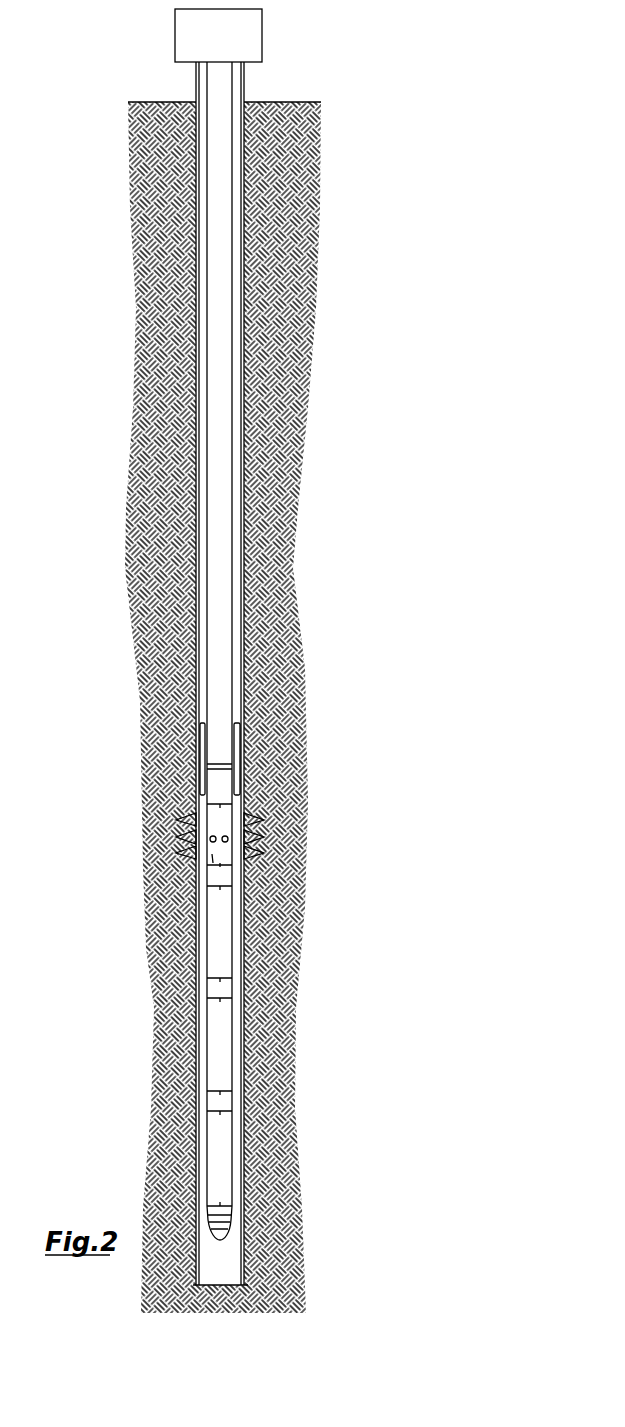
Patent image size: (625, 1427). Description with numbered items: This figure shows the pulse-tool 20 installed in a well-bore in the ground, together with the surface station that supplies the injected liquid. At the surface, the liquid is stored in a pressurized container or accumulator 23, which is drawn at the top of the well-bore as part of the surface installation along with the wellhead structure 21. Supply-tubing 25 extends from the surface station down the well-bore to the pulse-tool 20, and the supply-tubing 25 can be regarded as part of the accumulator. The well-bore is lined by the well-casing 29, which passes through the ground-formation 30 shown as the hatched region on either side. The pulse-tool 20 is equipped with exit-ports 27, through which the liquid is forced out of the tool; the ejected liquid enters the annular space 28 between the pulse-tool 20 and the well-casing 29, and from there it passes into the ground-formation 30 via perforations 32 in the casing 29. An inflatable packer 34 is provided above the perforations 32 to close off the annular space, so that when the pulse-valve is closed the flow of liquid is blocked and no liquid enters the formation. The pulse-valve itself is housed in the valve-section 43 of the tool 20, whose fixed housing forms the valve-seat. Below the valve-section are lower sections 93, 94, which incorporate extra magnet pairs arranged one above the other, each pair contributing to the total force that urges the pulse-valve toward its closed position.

The pulse-tool 20 is at (206, 1022).
The wellhead 21 is at (238, 20).
The accumulator 23 is at (240, 43).
The supply-tubing 25 is at (217, 315).
The exit-ports 27 is at (217, 836).
The annular space 28 is at (228, 377).
The well-casing 29 is at (237, 573).
The ground-formation 30 is at (285, 473).
The perforations 32 is at (243, 833).
The inflatable packer 34 is at (228, 745).
The valve-section 43 is at (206, 858).
The lower section 93 is at (213, 1042).
The lower section 94 is at (215, 1168).